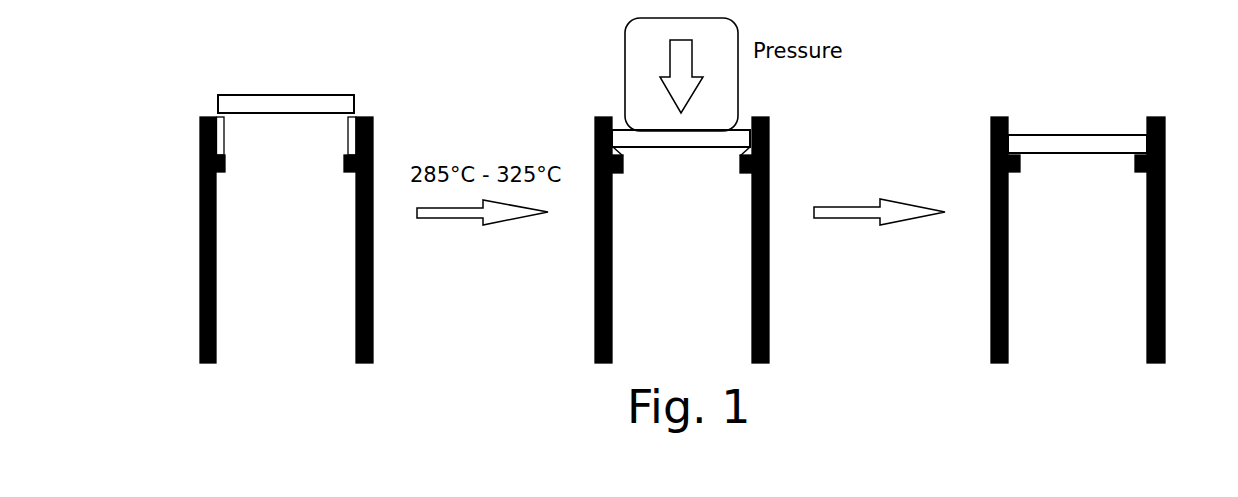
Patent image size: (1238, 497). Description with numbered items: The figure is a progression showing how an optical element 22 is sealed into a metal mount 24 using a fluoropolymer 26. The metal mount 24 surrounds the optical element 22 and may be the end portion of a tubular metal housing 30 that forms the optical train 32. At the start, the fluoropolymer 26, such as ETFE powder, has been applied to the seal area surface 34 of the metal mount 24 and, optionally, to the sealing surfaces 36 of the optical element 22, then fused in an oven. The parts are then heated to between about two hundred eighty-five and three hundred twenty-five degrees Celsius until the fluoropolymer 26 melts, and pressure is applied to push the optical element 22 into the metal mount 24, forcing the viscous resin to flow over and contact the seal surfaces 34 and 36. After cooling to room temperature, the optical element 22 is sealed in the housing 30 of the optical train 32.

The optical element 22 is at (287, 95).
The metal mount 24 is at (373, 88).
The fluoropolymer 26 is at (217, 113).
The tubular metal housing 30 is at (374, 303).
The optical train 32 is at (971, 352).
The seal area surface 34 is at (219, 147).
The sealing surface 36 is at (218, 112).